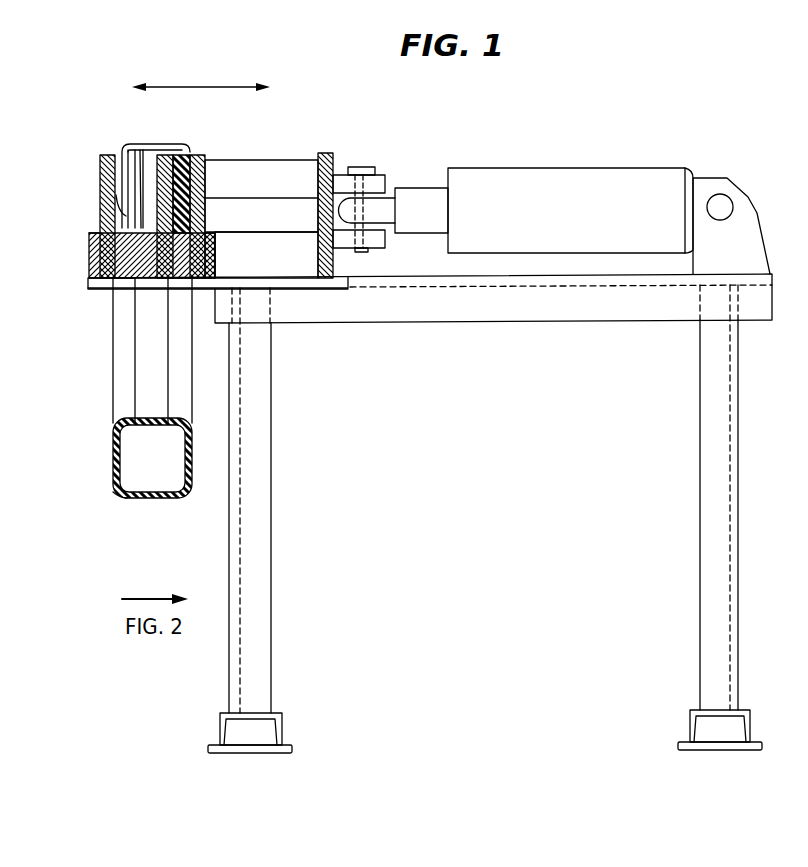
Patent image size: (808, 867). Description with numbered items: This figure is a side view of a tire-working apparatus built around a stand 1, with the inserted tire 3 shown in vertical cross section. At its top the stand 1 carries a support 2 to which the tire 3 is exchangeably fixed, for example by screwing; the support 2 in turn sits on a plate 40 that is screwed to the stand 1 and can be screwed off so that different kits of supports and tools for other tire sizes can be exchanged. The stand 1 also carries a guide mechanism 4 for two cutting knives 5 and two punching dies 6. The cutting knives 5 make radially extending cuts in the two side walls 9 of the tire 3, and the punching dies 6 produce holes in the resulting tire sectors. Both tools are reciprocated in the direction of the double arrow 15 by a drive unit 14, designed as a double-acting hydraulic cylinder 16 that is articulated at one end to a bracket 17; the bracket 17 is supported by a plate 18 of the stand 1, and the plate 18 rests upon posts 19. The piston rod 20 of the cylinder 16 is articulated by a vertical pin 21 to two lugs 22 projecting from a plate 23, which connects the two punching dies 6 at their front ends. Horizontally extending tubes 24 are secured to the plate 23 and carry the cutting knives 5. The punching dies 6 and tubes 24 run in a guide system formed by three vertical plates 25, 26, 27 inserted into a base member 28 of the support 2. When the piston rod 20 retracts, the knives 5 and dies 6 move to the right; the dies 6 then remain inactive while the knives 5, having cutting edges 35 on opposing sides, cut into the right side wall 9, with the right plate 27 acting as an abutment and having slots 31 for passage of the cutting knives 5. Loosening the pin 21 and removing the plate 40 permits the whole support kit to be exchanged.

The stand 1 is at (276, 574).
The support 2 is at (86, 230).
The tire 3 is at (109, 500).
The guide mechanism 4 is at (224, 181).
The cutting knives 5 is at (150, 157).
The punching dies 6 is at (283, 210).
The side walls 9 is at (107, 151).
The drive unit 14 is at (507, 142).
The double arrow 15 is at (192, 85).
The double-acting hydraulic cylinder 16 is at (600, 178).
The bracket 17 is at (705, 193).
The plate 18 is at (583, 275).
The posts 19 is at (262, 480).
The piston rod 20 is at (427, 192).
The vertical pin 21 is at (363, 167).
The lugs 22 is at (380, 182).
The plate 23 is at (327, 153).
The tubes 24 is at (307, 255).
The vertical plate 25 is at (108, 278).
The vertical plate 26 is at (162, 278).
The vertical plate 27 is at (197, 150).
The base member 28 is at (115, 243).
The slots 31 is at (94, 144).
The cutting edges 35 is at (132, 150).
The plate 40 is at (293, 293).